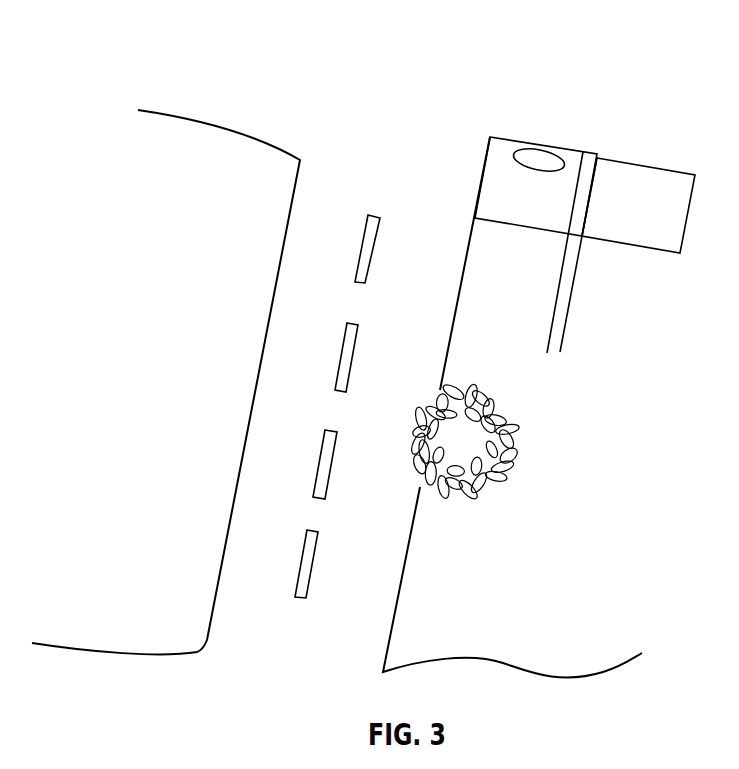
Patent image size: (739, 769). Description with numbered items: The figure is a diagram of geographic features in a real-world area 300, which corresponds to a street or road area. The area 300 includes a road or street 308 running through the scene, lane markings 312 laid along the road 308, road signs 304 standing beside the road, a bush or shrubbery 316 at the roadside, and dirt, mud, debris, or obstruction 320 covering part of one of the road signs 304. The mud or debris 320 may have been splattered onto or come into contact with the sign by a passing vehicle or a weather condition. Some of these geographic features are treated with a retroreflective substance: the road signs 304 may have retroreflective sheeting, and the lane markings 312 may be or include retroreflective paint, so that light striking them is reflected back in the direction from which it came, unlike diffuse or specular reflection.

The real-world area 300 is at (473, 80).
The road signs 304 is at (567, 149).
The road 308 is at (333, 185).
The lane markings 312 is at (339, 366).
The bush 316 is at (517, 420).
The obstruction 320 is at (530, 158).